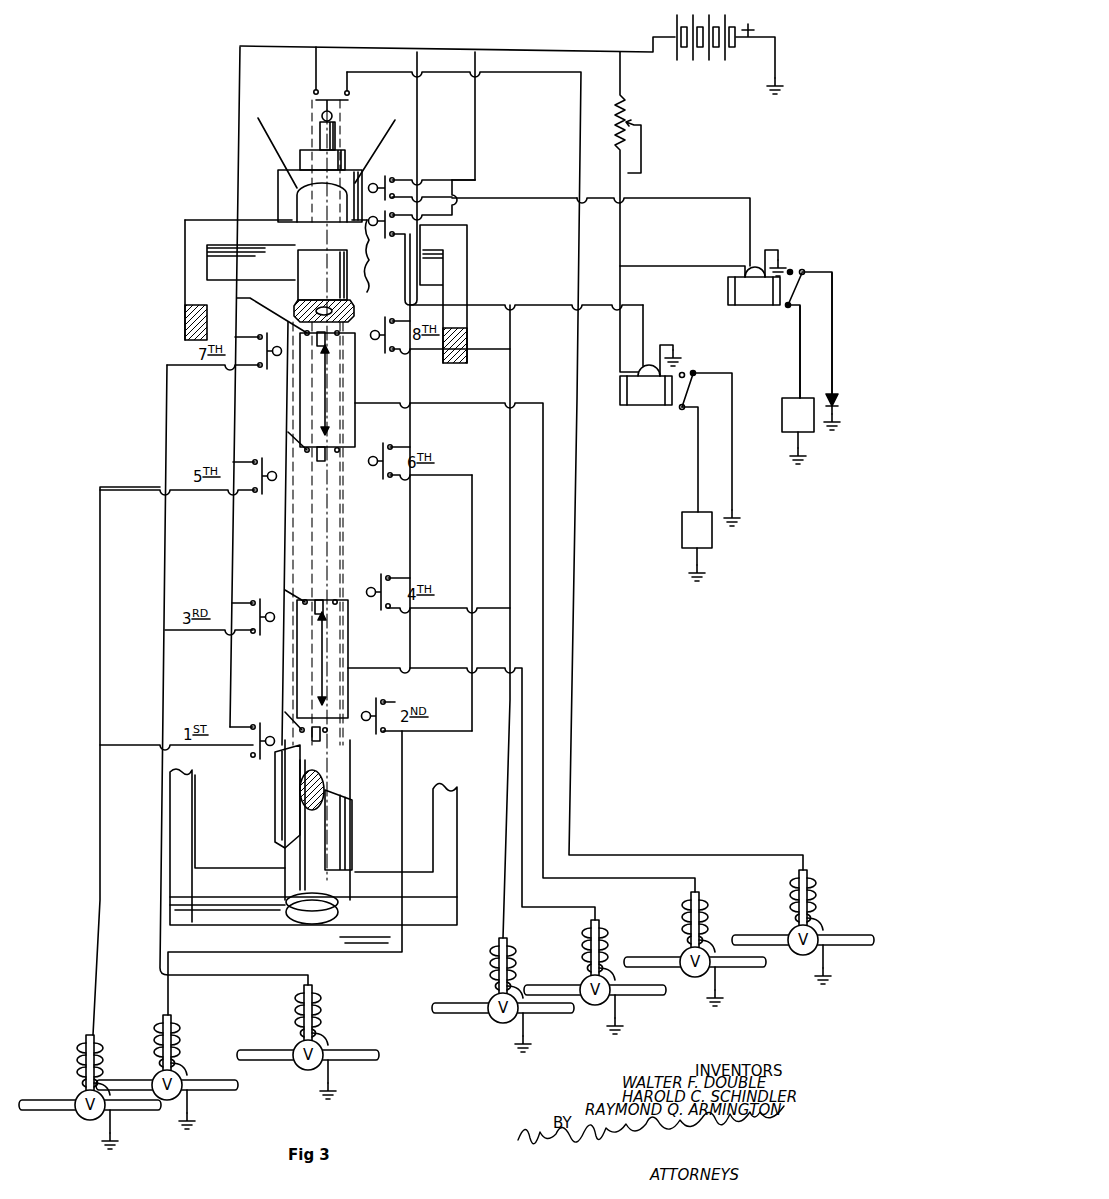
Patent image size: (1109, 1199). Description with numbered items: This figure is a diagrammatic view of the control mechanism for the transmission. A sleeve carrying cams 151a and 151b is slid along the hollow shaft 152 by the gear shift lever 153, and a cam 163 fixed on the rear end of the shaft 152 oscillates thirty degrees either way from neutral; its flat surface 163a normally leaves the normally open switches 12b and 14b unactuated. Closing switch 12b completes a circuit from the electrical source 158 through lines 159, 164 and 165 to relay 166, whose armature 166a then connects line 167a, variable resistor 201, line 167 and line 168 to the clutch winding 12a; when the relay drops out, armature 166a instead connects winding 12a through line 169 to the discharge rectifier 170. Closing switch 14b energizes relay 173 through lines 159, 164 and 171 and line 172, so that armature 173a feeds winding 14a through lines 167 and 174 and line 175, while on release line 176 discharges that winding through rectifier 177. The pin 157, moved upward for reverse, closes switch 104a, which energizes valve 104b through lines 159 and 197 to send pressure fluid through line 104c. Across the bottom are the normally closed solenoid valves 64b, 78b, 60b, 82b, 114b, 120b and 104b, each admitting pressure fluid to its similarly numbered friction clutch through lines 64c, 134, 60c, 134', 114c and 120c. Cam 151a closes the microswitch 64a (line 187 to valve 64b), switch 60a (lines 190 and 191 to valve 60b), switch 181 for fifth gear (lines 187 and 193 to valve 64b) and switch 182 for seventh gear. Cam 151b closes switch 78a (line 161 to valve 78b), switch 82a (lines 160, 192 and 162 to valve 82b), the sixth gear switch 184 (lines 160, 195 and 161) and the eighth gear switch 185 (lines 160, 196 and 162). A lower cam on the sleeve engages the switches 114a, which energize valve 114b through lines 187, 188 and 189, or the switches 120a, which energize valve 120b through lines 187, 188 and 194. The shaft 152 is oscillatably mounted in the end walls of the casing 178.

The line 159 is at (442, 51).
The electrical source 158 is at (670, 23).
The line 167a is at (624, 72).
The variable resistor 201 is at (638, 145).
The line 167 is at (620, 244).
The line 172 is at (668, 203).
The line 174 is at (680, 268).
The relay 173 is at (757, 300).
The armature 173a is at (799, 295).
The line 175 is at (800, 360).
The line 176 is at (832, 345).
The discharge rectifier 177 is at (829, 396).
The electromagnetic clutch winding 14a is at (798, 431).
The relay 166 is at (648, 407).
The armature 166a is at (682, 393).
The line 169 is at (732, 422).
The discharge rectifier 170 is at (740, 528).
The line 168 is at (697, 480).
The electrical winding 12a is at (697, 546).
The switch 104a is at (328, 77).
The line 197 is at (532, 74).
The pin 157 is at (335, 128).
The cam 163 is at (284, 195).
The flat surface 163a is at (365, 215).
The switch 14b is at (378, 176).
The line 171 is at (451, 180).
The line 164 is at (480, 159).
The line 160 is at (419, 138).
The line 165 is at (456, 202).
The switch 12b is at (381, 246).
The hollow shaft 152 is at (350, 300).
The line 188 is at (275, 547).
The line 187 is at (240, 112).
The switches 120a is at (324, 495).
The switches 114a is at (322, 670).
The switch 182 is at (268, 372).
The switch 181 is at (262, 502).
The line 190 is at (188, 632).
The switch 60a is at (258, 600).
The microswitch 64a is at (258, 722).
The line 193 is at (100, 686).
The switch 185 is at (386, 356).
The switch 184 is at (378, 484).
The line 195 is at (472, 524).
The switch 82a is at (374, 616).
The line 192 is at (430, 614).
The line 162 is at (508, 640).
The line 196 is at (510, 448).
The line 194 is at (358, 406).
The line 189 is at (362, 670).
The switch 78a is at (370, 740).
The casing 178 is at (439, 854).
The line 161 is at (412, 822).
The line 191 is at (165, 822).
The cam 151a is at (275, 797).
The cam 151b is at (352, 822).
The gear shift lever 153 is at (325, 786).
The solenoid valve 64b is at (78, 1120).
The line 64c is at (130, 1112).
The solenoid control valve 78b is at (168, 1116).
The line 134 is at (204, 1054).
The valve 60b is at (290, 1068).
The line 60c is at (366, 1064).
The solenoid actuated valve 82b is at (490, 1020).
The line 134' is at (543, 972).
The valve 114b is at (591, 1022).
The line 114c is at (643, 1000).
The valve 120b is at (690, 991).
The line 120c is at (742, 968).
The valve 104b is at (795, 958).
The line 104c is at (815, 955).